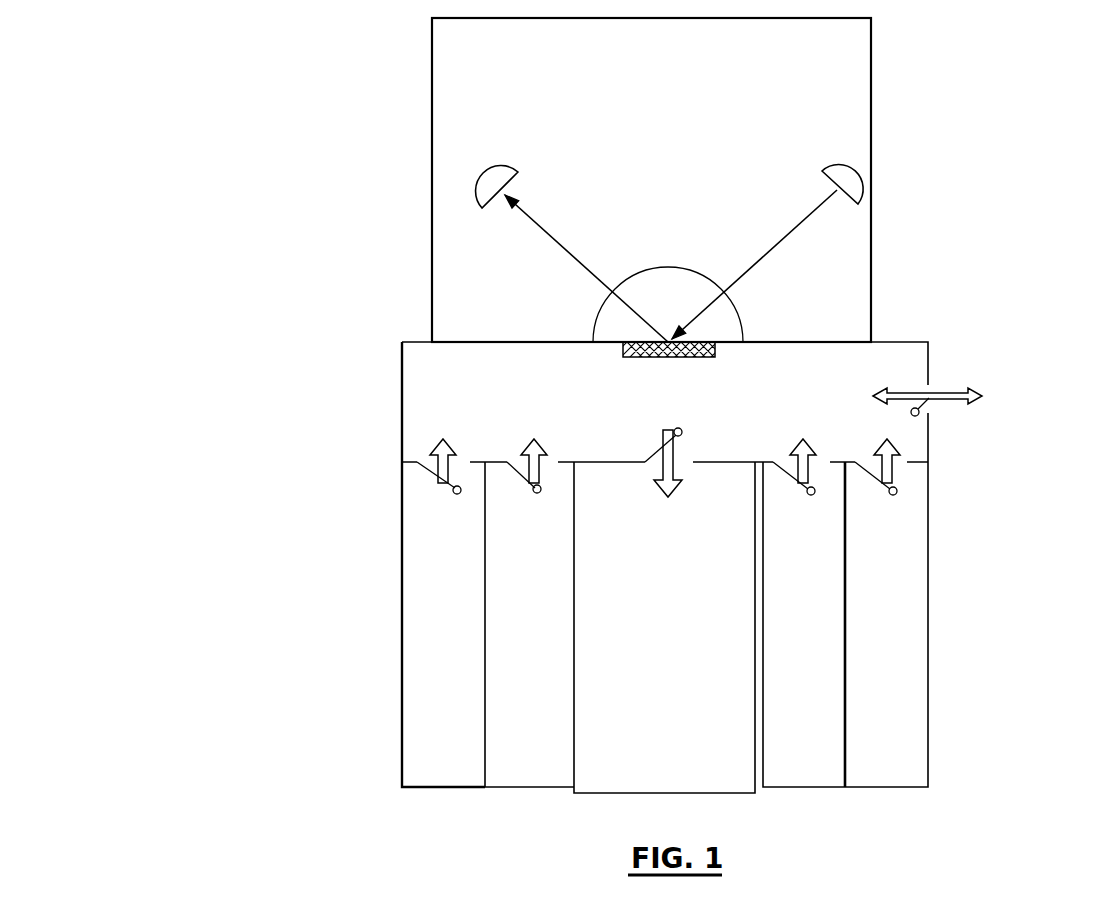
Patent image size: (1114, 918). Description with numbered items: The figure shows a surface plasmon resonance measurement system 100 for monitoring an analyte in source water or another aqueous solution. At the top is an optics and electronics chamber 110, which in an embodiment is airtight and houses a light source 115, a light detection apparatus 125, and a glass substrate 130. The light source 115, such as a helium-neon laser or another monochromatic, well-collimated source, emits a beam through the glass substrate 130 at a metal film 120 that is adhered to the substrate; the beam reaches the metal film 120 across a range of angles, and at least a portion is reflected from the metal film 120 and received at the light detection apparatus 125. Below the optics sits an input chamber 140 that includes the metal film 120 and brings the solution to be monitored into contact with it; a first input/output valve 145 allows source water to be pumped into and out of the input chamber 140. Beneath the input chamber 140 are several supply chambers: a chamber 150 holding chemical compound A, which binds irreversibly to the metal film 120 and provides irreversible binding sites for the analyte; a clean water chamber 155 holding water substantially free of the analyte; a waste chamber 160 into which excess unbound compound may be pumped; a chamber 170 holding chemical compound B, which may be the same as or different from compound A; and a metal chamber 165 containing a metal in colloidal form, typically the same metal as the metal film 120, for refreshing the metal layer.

The surface plasmon resonance measurement system 100 is at (255, 110).
The optics and electronics chamber 110 is at (872, 40).
The light source 115 is at (838, 188).
The metal film 120 is at (717, 353).
The light detection apparatus 125 is at (482, 210).
The glass substrate 130 is at (594, 325).
The input chamber 140 is at (441, 390).
The first input/output valve 145 is at (930, 405).
The chamber 150 is at (429, 548).
The clean water chamber 155 is at (520, 594).
The waste chamber 160 is at (664, 654).
The metal chamber 165 is at (898, 535).
The chamber 170 is at (807, 580).